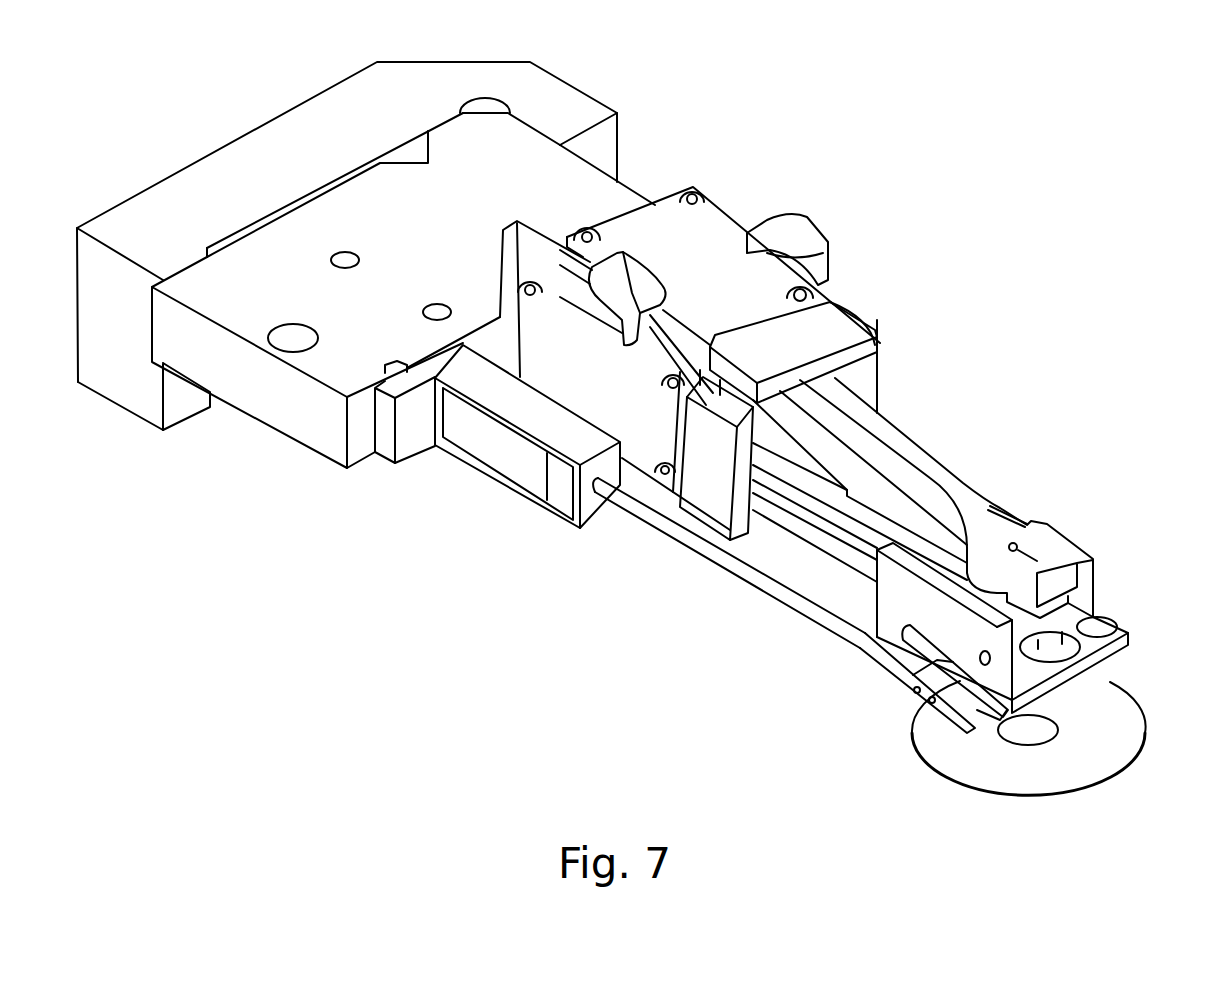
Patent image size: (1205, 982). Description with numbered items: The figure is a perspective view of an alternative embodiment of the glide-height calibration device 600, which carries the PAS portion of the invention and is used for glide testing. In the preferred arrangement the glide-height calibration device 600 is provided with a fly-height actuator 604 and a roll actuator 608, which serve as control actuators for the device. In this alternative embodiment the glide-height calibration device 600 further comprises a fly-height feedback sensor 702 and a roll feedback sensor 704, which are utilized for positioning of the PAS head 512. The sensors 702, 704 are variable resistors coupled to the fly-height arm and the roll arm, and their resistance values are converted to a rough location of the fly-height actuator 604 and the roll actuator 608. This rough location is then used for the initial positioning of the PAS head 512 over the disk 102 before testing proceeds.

The glide-height calibration device 600 is at (978, 73).
The fly-height actuator 604 is at (703, 240).
The fly-height feedback sensor 702 is at (812, 333).
The roll feedback sensor 704 is at (710, 497).
The roll actuator 608 is at (566, 518).
The PAS head 512 is at (1003, 710).
The disk 102 is at (1078, 747).